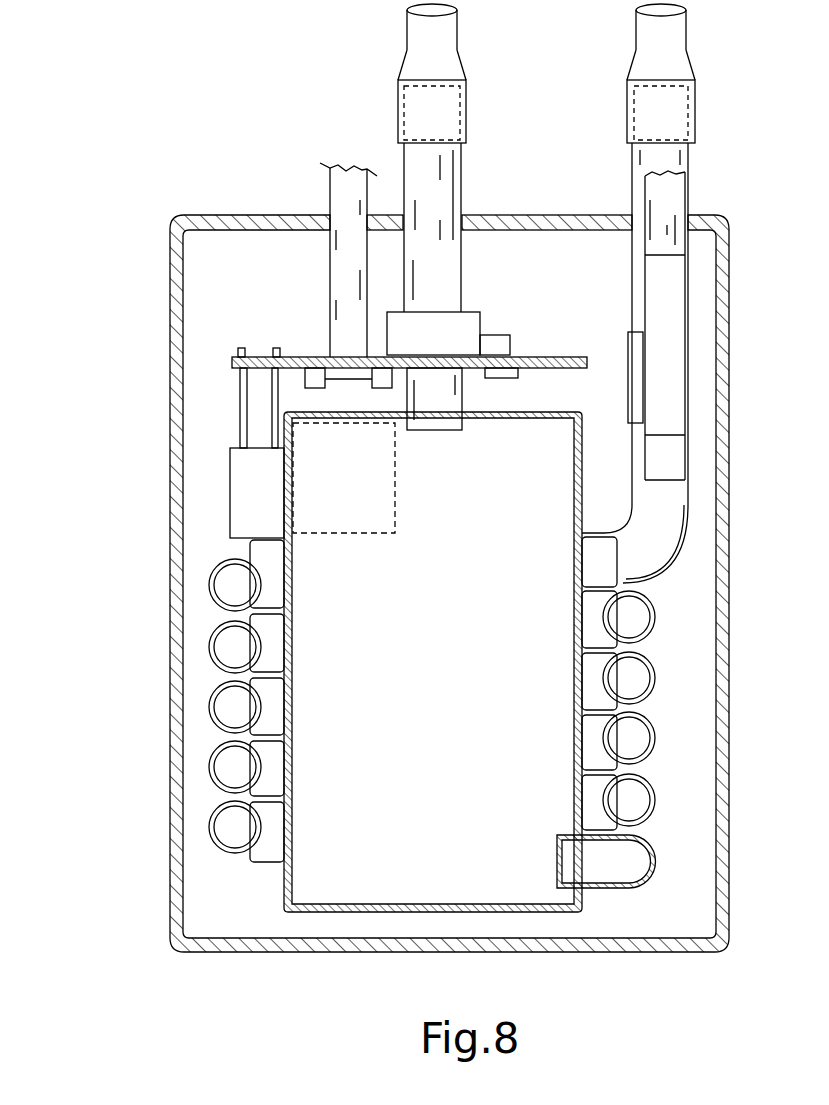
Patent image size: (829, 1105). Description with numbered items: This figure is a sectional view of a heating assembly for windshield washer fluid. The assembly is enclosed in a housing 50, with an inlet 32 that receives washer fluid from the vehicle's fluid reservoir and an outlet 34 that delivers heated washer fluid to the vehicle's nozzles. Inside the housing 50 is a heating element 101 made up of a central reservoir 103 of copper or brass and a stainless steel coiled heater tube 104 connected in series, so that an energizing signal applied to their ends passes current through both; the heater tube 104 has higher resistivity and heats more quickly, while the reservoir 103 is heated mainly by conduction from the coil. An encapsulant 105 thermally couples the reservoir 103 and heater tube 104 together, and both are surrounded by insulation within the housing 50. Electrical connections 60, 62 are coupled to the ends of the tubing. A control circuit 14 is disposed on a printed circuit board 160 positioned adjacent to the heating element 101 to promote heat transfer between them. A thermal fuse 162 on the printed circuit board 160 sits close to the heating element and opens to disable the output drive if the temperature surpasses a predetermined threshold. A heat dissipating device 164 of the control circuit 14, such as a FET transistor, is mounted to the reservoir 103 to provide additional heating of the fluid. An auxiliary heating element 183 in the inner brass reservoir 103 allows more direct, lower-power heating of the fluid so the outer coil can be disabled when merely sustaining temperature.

The control circuit 14 is at (300, 350).
The inlet 32 is at (435, 33).
The outlet 34 is at (665, 40).
The housing 50 is at (723, 563).
The electrical connection 60 is at (473, 312).
The electrical connection 62 is at (650, 378).
The heating element 101 is at (672, 675).
The central reservoir 103 is at (525, 913).
The heater tube 104 is at (218, 562).
The encapsulant 105 is at (243, 738).
The printed circuit board 160 is at (233, 365).
The thermal fuse 162 is at (347, 354).
The heat dissipating device 164 is at (253, 492).
The auxiliary heating element 183 is at (330, 507).